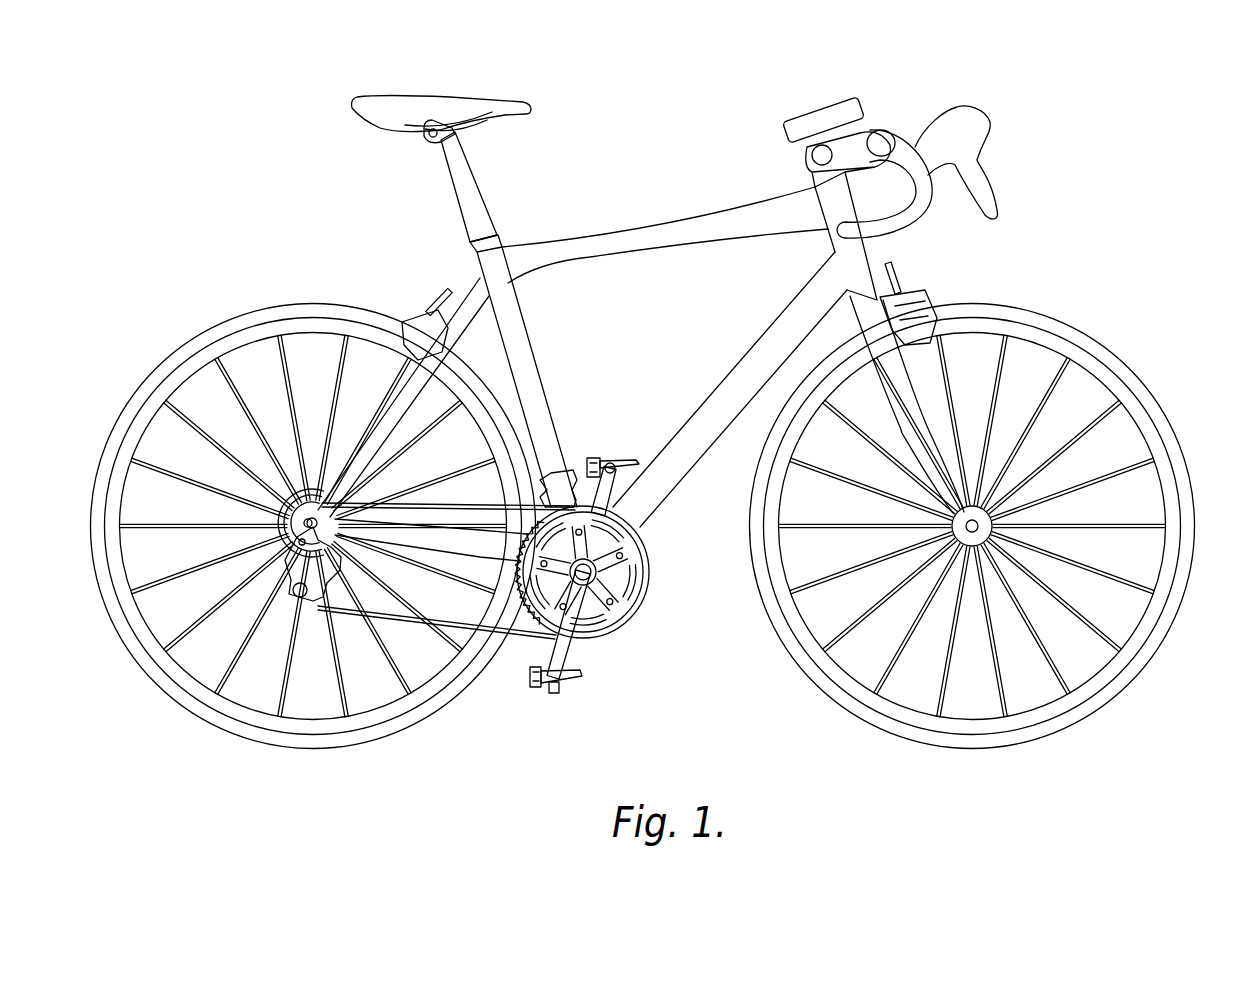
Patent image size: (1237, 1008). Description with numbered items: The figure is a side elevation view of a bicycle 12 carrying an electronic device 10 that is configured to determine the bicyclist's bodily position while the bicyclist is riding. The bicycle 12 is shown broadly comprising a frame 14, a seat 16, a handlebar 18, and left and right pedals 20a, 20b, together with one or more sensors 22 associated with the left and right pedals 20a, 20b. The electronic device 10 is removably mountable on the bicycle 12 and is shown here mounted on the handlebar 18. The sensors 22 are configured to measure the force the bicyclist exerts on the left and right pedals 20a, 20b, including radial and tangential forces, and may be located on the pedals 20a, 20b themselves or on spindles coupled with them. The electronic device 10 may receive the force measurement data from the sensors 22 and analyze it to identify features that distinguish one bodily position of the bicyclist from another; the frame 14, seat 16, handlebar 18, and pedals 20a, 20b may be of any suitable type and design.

The electronic device 10 is at (812, 122).
The bicycle 12 is at (652, 418).
The frame 14 is at (670, 227).
The seat 16 is at (452, 105).
The handlebar 18 is at (892, 150).
The left pedal 20a is at (528, 704).
The right pedal 20b is at (620, 440).
The sensors 22 is at (565, 682).